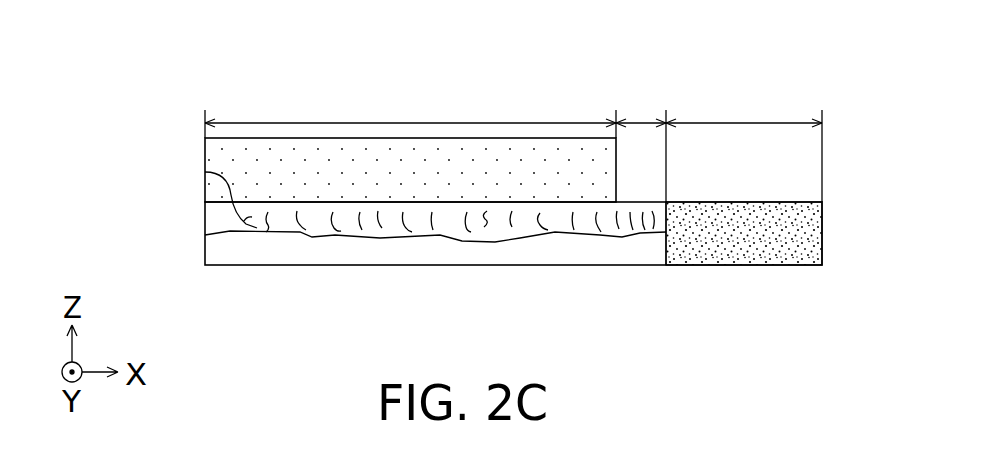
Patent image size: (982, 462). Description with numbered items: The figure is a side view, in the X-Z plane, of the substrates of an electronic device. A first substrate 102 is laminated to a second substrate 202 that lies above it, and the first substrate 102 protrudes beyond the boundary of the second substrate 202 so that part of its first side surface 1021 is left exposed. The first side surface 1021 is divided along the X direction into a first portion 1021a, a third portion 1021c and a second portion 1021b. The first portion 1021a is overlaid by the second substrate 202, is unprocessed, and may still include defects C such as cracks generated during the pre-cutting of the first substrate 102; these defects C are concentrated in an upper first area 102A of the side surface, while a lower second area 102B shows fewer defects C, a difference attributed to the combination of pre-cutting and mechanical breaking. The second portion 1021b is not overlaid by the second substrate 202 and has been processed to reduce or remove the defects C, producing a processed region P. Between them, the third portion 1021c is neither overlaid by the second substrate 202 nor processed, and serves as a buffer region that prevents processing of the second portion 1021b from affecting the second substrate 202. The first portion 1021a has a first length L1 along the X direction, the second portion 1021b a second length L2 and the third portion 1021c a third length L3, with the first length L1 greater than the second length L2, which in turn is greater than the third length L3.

The second substrate 202 is at (205, 145).
The first substrate 102 is at (100, 200).
The first area 102A is at (462, 286).
The second area 102B is at (205, 253).
The first side surface 1021 is at (544, 286).
The first portion 1021a is at (415, 254).
The second portion 1021b is at (744, 263).
The third portion 1021c is at (645, 254).
The defects C is at (205, 172).
The processed region P is at (801, 208).
The first length L1 is at (410, 106).
The second length L2 is at (744, 138).
The third length L3 is at (641, 138).